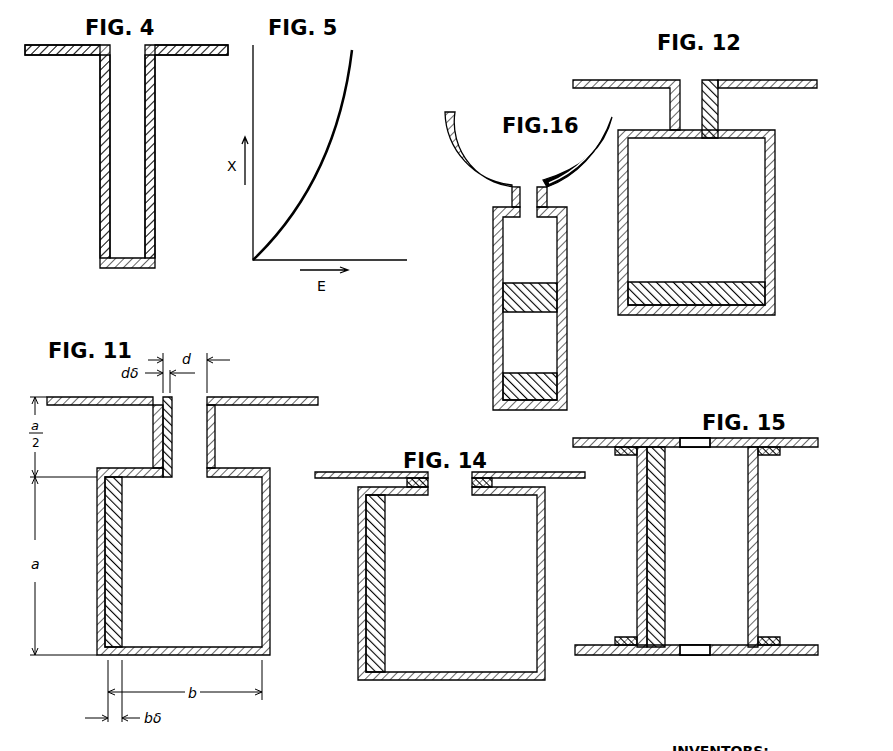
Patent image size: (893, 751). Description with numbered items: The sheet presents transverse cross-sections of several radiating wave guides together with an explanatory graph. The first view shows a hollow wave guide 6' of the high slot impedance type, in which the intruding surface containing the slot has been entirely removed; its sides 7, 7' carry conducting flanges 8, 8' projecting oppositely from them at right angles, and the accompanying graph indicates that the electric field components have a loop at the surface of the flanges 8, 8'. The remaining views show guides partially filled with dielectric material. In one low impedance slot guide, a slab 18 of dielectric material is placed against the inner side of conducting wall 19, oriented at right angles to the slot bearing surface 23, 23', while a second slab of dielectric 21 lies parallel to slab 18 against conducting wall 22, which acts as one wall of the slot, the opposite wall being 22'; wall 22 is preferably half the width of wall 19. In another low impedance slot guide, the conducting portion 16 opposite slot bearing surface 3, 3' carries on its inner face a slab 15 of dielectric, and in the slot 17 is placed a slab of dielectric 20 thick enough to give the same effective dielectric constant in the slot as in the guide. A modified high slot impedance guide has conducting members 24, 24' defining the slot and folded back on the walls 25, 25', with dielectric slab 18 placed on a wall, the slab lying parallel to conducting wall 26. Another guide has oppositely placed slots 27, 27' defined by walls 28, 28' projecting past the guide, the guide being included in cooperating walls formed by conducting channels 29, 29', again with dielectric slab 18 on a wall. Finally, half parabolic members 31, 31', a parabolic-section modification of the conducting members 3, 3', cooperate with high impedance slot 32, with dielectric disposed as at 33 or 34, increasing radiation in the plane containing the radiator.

In FIG. 4, the hollow wave guide 6' is at (126, 156).
In FIG. 4, the side 7 is at (92, 156).
In FIG. 4, the side 7' is at (161, 156).
In FIG. 4, the conducting flange 8 is at (191, 43).
In FIG. 4, the conducting flange 8' is at (62, 43).
In FIG. 12, the slot bearing surface 3 is at (626, 96).
In FIG. 12, the slot bearing surface 3' is at (767, 75).
In FIG. 12, the slab of dielectric 20 is at (698, 96).
In FIG. 12, the slot 17 is at (693, 120).
In FIG. 12, the slab of dielectric 15 is at (705, 284).
In FIG. 12, the conducting portion 16 is at (730, 315).
In FIG. 16, the half parabolic member 31 is at (482, 159).
In FIG. 16, the half parabolic member 31' is at (574, 162).
In FIG. 16, the high impedance slot 32 is at (532, 204).
In FIG. 16, the dielectric 33 is at (542, 312).
In FIG. 16, the dielectric 34 is at (538, 374).
In FIG. 11, the slot bearing surface 23 is at (100, 393).
In FIG. 11, the slot bearing surface 23' is at (262, 393).
In FIG. 11, the conducting wall 22 is at (144, 436).
In FIG. 11, the conducting wall 22' is at (226, 436).
In FIG. 11, the slab of dielectric 21 is at (171, 458).
In FIG. 11, the conducting wall 19 is at (100, 513).
In FIG. 11, the slab of dielectric material 18 is at (118, 562).
In FIG. 14, the slab of dielectric material 18 is at (378, 577).
In FIG. 15, the slab of dielectric material 18 is at (660, 579).
In FIG. 14, the conducting member 24 is at (371, 487).
In FIG. 14, the conducting member 24' is at (528, 487).
In FIG. 14, the wall 25 is at (411, 497).
In FIG. 14, the wall 25' is at (491, 497).
In FIG. 14, the conducting wall 26 is at (447, 489).
In FIG. 15, the wall 28 is at (695, 434).
In FIG. 15, the wall 28' is at (696, 660).
In FIG. 15, the slot 27 is at (701, 455).
In FIG. 15, the slot 27' is at (706, 642).
In FIG. 15, the conducting channel 29 is at (628, 547).
In FIG. 15, the conducting channel 29' is at (768, 547).